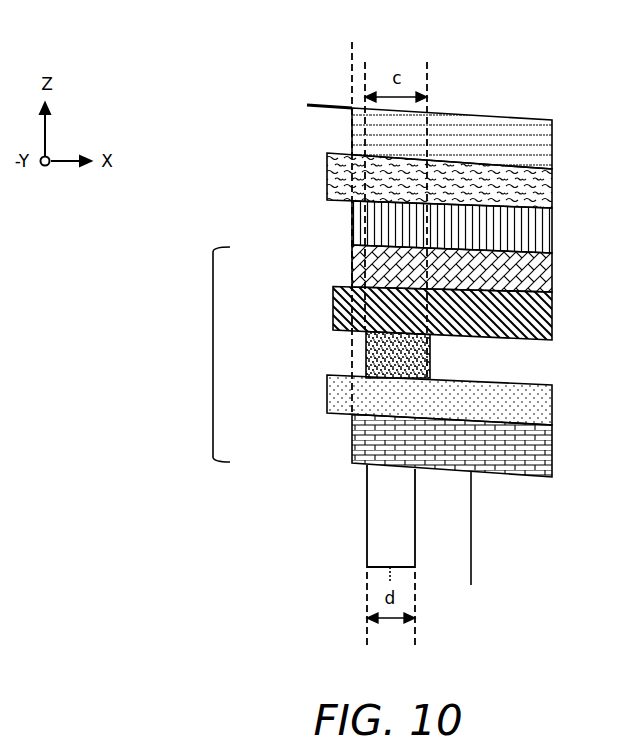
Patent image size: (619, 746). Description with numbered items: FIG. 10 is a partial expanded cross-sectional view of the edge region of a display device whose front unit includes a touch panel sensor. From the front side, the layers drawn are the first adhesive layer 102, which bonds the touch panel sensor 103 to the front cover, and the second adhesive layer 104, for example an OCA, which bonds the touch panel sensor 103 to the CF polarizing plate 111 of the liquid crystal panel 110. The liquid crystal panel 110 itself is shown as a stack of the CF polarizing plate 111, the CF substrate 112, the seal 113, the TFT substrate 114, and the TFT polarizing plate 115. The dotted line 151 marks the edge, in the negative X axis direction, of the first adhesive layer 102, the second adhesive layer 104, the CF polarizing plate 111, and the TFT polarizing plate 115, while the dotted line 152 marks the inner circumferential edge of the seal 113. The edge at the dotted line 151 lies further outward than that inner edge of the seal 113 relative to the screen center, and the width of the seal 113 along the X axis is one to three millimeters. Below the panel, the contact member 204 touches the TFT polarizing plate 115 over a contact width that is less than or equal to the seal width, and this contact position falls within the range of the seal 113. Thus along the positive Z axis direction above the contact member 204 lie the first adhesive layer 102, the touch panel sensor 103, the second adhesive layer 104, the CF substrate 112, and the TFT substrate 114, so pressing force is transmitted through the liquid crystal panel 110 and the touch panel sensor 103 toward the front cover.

The first adhesive layer 102 is at (395, 137).
The touch panel sensor 103 is at (384, 180).
The second adhesive layer 104 is at (395, 227).
The liquid crystal panel 110 is at (354, 361).
The CF polarizing plate 111 is at (394, 268).
The CF substrate 112 is at (388, 314).
The seal 113 is at (329, 355).
The TFT substrate 114 is at (384, 400).
The TFT polarizing plate 115 is at (390, 445).
The dotted line 151 is at (407, 212).
The dotted line 152 is at (479, 208).
The contact member 204 is at (355, 525).